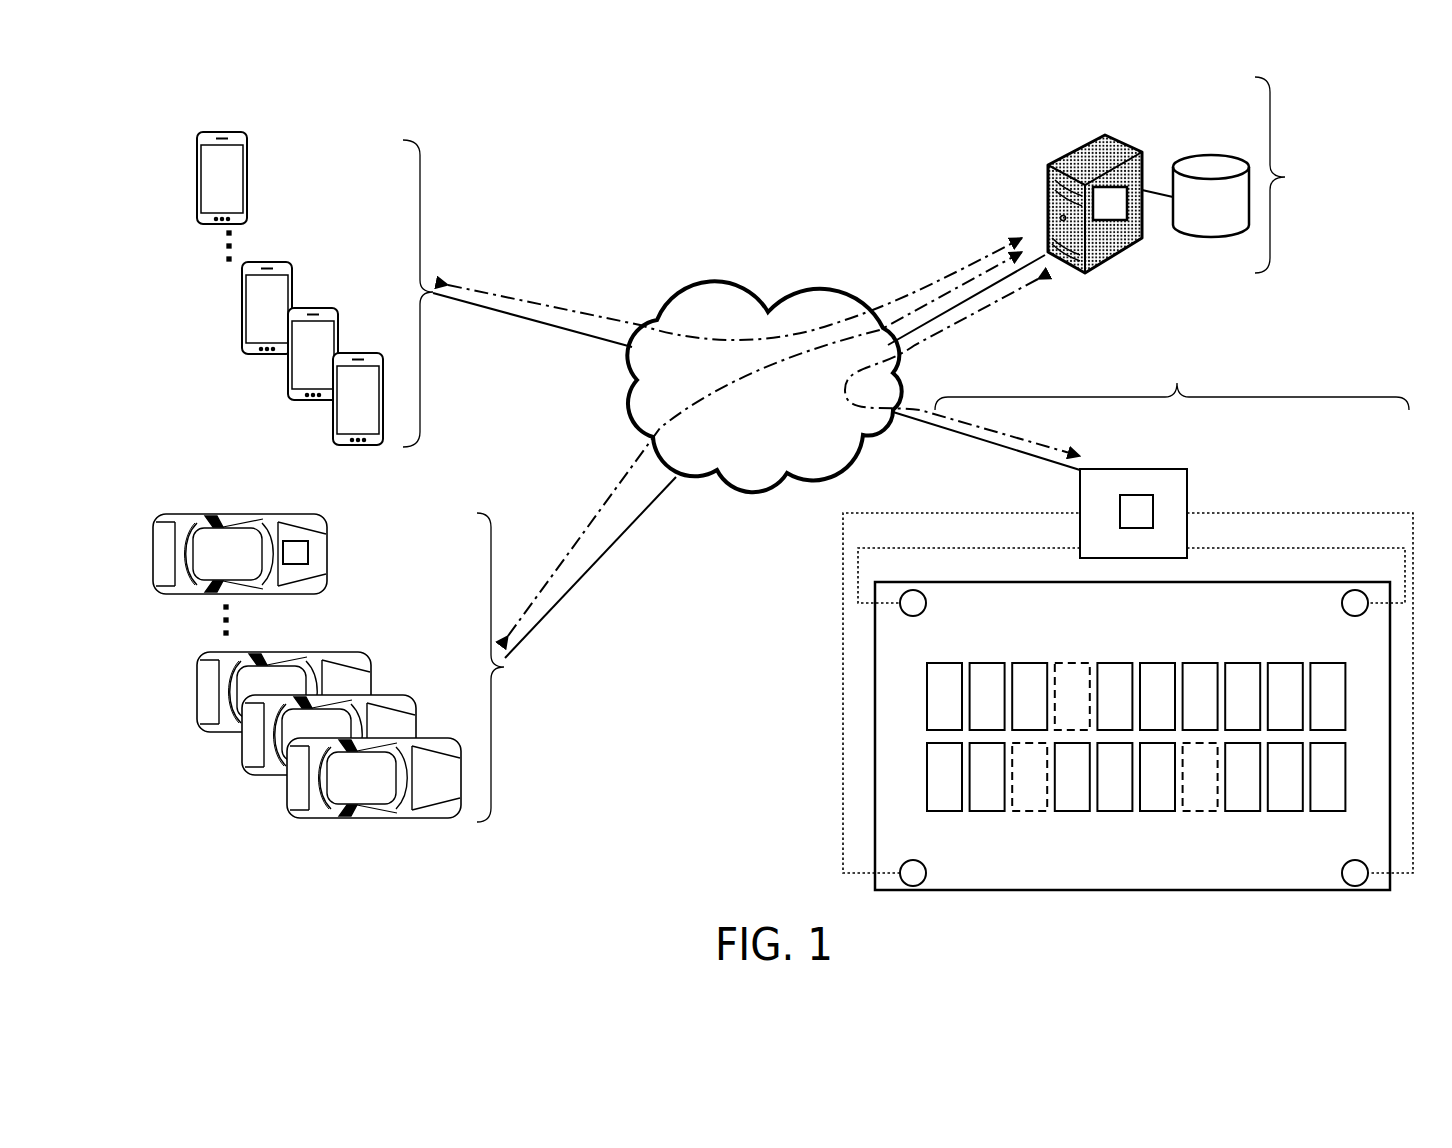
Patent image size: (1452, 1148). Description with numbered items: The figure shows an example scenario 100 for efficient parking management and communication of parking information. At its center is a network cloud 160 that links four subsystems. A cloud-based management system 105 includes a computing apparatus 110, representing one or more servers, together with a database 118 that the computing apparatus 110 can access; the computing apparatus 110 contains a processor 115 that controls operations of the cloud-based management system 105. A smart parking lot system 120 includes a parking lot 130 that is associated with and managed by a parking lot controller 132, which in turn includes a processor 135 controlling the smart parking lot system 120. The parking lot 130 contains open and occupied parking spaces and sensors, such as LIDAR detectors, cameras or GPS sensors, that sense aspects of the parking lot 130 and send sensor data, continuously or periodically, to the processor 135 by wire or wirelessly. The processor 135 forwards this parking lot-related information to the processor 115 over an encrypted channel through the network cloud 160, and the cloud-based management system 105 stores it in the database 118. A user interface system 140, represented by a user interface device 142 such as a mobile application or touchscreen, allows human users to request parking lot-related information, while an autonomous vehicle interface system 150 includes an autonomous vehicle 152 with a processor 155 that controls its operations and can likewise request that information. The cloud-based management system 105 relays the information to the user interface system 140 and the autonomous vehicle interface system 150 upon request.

The scenario 100 is at (615, 80).
The cloud-based management system 105 is at (1201, 178).
The computing apparatus 110 is at (1121, 178).
The processor 115 is at (1112, 220).
The database 118 is at (1193, 159).
The smart parking lot system 120 is at (1177, 383).
The parking lot 130 is at (1133, 738).
The parking lot controller 132 is at (1173, 496).
The processor 135 is at (1137, 495).
The user interface system 140 is at (345, 269).
The user interface device 142 is at (222, 132).
The autonomous vehicle interface system 150 is at (357, 648).
The autonomous vehicle 152 is at (261, 534).
The processor 155 is at (293, 541).
The network cloud 160 is at (737, 289).